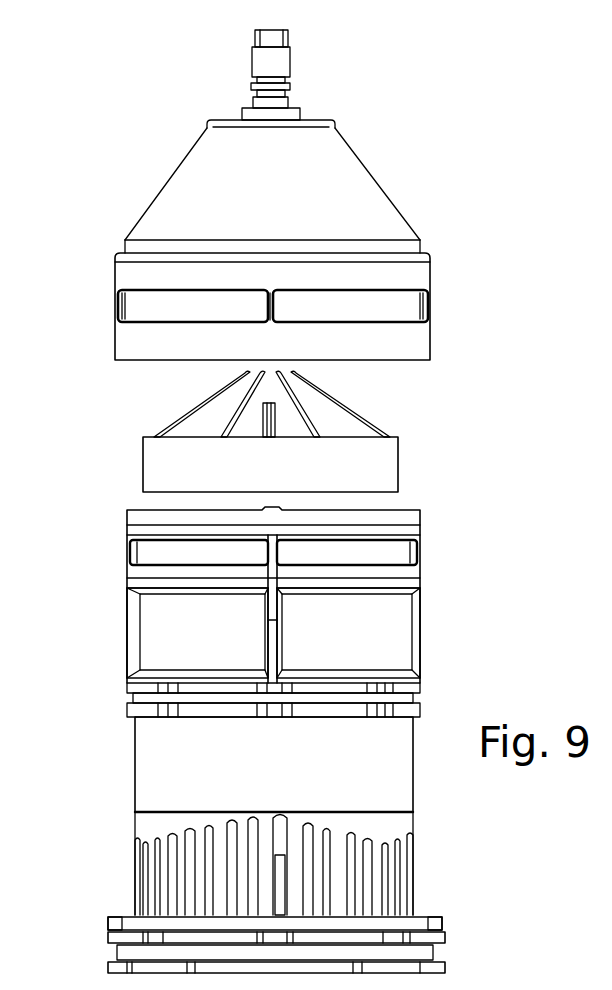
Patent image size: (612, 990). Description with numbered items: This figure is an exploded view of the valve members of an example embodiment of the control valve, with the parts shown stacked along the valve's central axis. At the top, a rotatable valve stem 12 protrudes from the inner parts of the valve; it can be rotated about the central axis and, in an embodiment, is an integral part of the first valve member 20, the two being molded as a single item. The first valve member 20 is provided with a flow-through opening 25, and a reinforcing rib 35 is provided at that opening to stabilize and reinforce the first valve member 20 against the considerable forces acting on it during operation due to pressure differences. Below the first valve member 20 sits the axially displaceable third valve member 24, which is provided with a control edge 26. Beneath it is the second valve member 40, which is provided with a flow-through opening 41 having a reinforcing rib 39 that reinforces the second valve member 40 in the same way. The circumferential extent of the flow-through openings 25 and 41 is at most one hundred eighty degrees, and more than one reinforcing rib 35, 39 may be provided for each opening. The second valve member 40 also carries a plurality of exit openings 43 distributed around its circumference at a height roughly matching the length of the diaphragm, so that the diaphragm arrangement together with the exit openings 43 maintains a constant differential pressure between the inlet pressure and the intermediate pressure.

The rotatable valve stem 12 is at (287, 35).
The first valve member 20 is at (330, 180).
The flow-through opening 25 is at (152, 303).
The reinforcing rib 35 is at (269, 289).
The third valve member 24 is at (388, 470).
The control edge 26 is at (188, 493).
The reinforcing rib 39 is at (271, 545).
The flow-through opening 41 is at (158, 551).
The second valve member 40 is at (165, 760).
The exit openings 43 is at (372, 875).